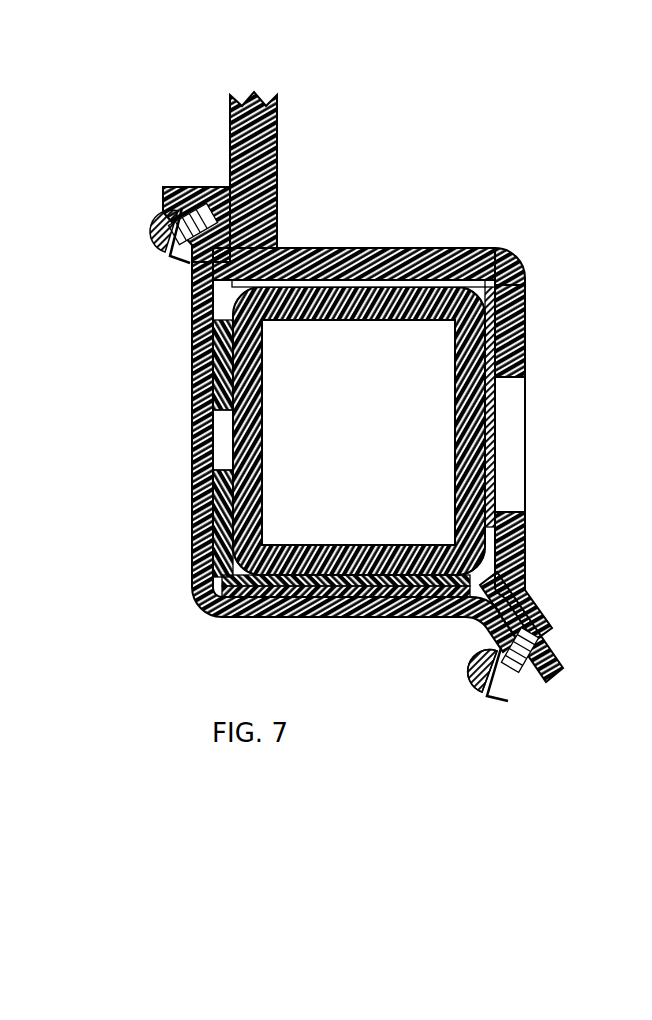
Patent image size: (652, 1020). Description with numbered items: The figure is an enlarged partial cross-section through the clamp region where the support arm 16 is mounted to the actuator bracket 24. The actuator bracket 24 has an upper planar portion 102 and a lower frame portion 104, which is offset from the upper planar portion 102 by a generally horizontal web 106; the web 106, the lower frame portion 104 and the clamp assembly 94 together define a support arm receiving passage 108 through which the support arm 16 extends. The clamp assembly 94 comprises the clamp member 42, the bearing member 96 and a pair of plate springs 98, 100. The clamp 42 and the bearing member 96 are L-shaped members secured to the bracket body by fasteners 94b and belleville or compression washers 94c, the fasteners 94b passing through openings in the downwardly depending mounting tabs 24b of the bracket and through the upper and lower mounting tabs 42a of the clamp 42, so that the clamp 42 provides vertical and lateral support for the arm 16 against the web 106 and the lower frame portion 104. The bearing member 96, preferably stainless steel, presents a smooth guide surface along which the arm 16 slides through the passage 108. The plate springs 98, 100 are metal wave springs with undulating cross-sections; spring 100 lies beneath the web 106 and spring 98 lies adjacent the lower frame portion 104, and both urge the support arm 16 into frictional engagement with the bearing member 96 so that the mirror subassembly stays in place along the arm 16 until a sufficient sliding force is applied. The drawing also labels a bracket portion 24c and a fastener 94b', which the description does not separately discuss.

The support arm 16 is at (498, 420).
The actuator bracket 24 is at (402, 361).
The downwardly depending mounting tabs 24b is at (215, 186).
The panel flange 24c is at (562, 678).
The clamp member 42 is at (191, 345).
The mounting tabs 42a is at (176, 196).
The clamp assembly 94 is at (208, 604).
The fasteners 94b is at (276, 469).
The fastener head 94b' is at (548, 648).
The belleville or compression washers 94c is at (182, 254).
The bearing member 96 is at (224, 594).
The plate spring 98 is at (496, 480).
The plate spring 100 is at (418, 284).
The upper planar portion 102 is at (280, 150).
The lower frame portion 104 is at (528, 315).
The web 106 is at (310, 246).
The support arm receiving passage 108 is at (500, 249).